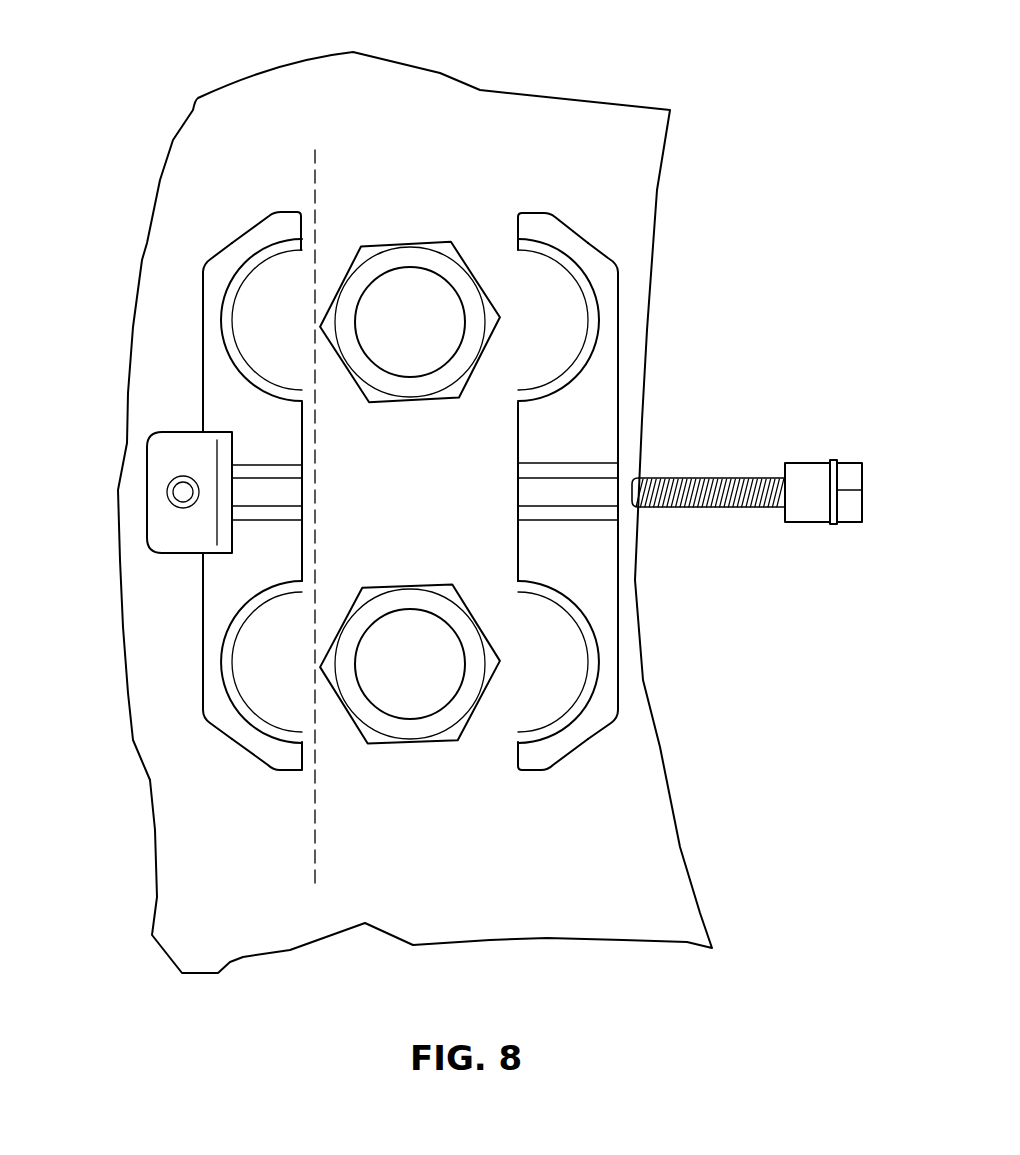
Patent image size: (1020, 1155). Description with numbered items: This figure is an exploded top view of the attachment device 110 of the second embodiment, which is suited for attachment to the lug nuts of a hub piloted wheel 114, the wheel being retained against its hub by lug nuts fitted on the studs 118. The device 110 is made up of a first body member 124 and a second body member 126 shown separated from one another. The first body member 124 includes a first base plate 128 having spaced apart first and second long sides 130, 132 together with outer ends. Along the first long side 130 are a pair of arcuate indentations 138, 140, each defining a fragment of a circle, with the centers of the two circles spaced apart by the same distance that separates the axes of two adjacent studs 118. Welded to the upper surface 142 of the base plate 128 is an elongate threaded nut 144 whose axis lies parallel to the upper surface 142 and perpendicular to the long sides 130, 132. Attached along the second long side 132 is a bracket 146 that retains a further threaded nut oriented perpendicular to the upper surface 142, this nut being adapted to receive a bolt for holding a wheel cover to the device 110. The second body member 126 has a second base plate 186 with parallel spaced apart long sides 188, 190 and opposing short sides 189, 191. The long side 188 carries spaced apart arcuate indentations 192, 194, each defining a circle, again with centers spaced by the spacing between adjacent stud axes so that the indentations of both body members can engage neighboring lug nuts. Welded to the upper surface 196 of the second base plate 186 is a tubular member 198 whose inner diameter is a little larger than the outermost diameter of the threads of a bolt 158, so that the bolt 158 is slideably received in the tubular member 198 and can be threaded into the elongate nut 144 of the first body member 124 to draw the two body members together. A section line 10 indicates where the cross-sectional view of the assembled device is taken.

The section line 10- 10 is at (273, 137).
The device 110 is at (465, 482).
The wheel 114 is at (562, 97).
The studs 118 is at (400, 408).
The first body member 124 is at (238, 502).
The second body member 126 is at (629, 482).
The first base plate 128 is at (176, 638).
The first long side 130 is at (307, 227).
The second long side 132 is at (198, 708).
The arcuate indentation 138 is at (240, 692).
The arcuate indentation 140 is at (245, 357).
The upper surface 142 is at (233, 580).
The elongate threaded nut 144 is at (265, 458).
The bracket 146 is at (145, 430).
The bolt 158 is at (733, 470).
The second base plate 186 is at (632, 687).
The long side 188 is at (518, 437).
The short side 189 is at (532, 210).
The long side 190 is at (633, 357).
The short side 191 is at (535, 778).
The arcuate indentation 192 is at (585, 667).
The arcuate indentation 194 is at (590, 315).
The upper surface 196 is at (578, 430).
The tubular member 198 is at (592, 525).